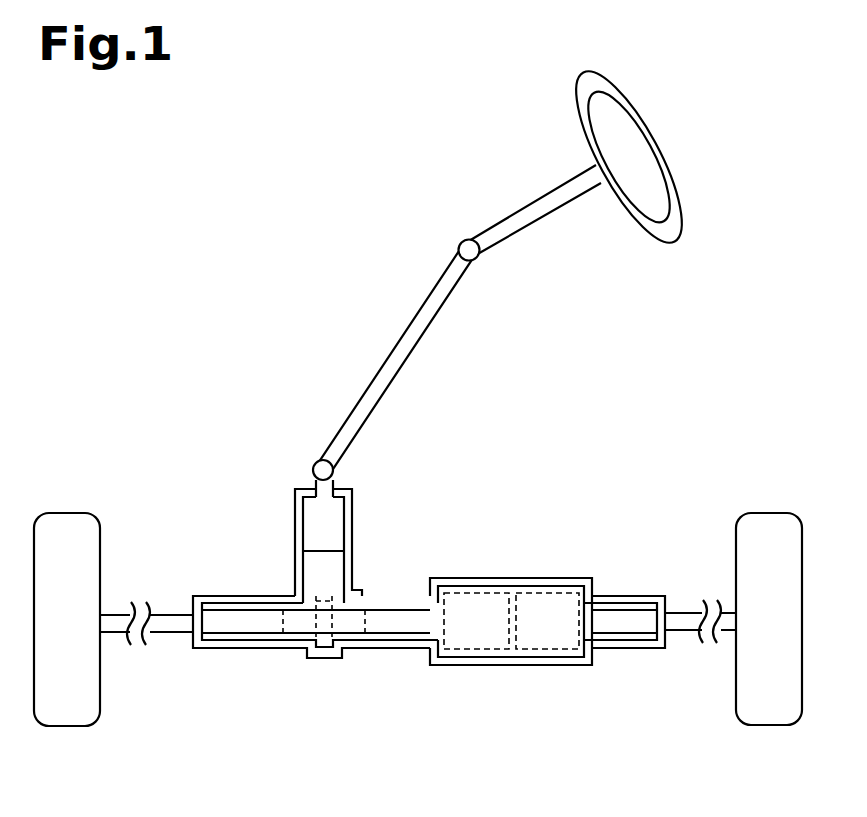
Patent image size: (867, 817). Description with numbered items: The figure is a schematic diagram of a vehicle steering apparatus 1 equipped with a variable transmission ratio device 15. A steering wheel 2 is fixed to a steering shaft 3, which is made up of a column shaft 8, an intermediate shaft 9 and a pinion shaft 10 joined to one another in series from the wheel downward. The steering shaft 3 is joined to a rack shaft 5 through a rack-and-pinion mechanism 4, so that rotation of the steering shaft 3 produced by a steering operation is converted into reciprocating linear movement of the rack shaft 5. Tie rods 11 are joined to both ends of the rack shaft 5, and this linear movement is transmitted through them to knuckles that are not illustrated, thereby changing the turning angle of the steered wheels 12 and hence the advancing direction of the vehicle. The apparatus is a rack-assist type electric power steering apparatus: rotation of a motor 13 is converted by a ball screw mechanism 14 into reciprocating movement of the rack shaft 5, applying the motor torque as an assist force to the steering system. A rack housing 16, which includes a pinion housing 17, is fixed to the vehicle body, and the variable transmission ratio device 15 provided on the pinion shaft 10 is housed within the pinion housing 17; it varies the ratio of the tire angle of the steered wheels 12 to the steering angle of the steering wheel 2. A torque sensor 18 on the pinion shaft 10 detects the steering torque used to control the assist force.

The vehicle steering apparatus 1 is at (227, 238).
The steering wheel 2 is at (675, 185).
The steering shaft 3 is at (523, 280).
The rack-and-pinion mechanism 4 is at (367, 670).
The rack shaft 5 is at (395, 613).
The column shaft 8 is at (493, 238).
The intermediate shaft 9 is at (394, 377).
The pinion shaft 10 is at (333, 473).
The tie rods 11 is at (172, 615).
The steered wheels 12 is at (68, 518).
The motor 13 is at (476, 621).
The ball screw mechanism 14 is at (547, 621).
The variable transmission ratio device 15 is at (307, 515).
The rack housing 16 is at (208, 597).
The pinion housing 17 is at (353, 530).
The torque sensor 18 is at (308, 568).